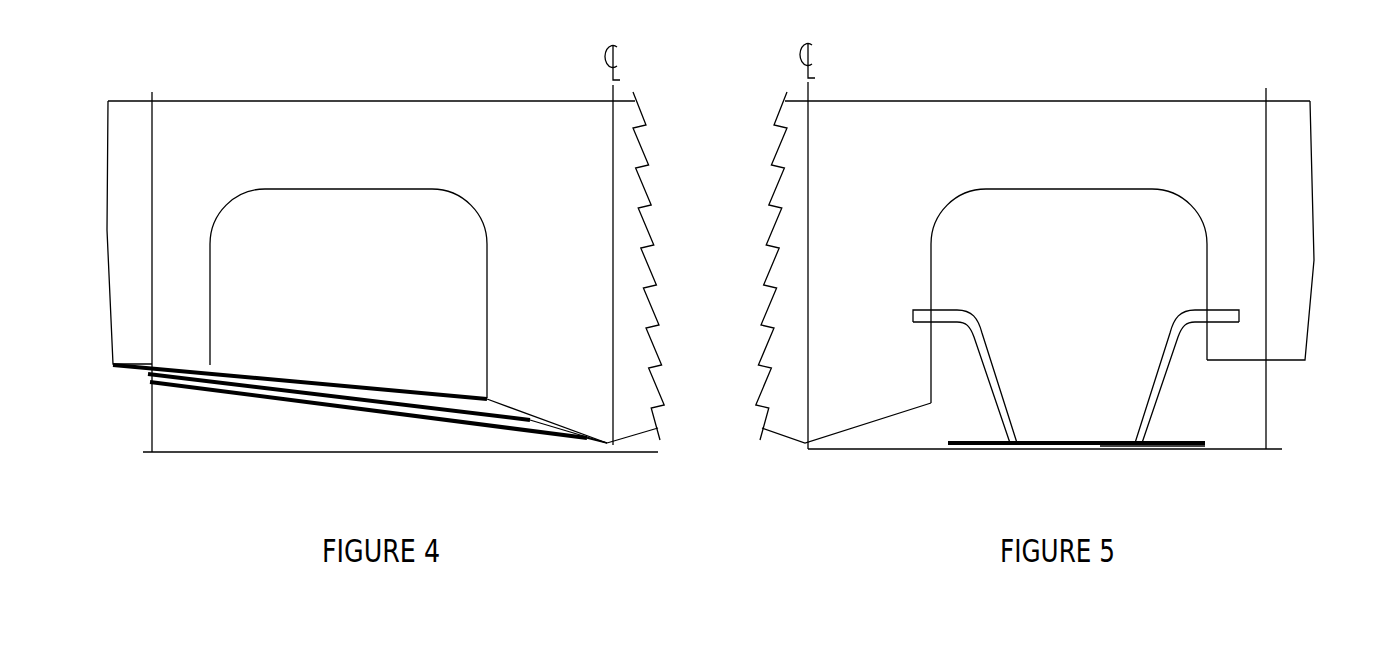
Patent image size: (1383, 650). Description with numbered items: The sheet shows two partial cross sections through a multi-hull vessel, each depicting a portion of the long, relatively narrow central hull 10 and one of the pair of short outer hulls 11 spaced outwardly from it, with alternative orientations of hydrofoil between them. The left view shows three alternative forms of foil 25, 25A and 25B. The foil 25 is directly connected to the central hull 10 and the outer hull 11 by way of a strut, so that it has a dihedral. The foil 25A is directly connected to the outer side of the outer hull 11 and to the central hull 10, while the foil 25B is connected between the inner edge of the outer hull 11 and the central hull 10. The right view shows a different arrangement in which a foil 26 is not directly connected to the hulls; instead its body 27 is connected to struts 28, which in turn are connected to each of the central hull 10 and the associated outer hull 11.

In FIG. 4, the central hull 10 is at (640, 147).
In FIG. 5, the central hull 10 is at (780, 147).
In FIG. 4, the outer hull 11 is at (177, 313).
In FIG. 5, the outer hull 11 is at (1273, 323).
In FIG. 4, the foil 25 is at (404, 412).
In FIG. 4, the foil 25A is at (377, 408).
In FIG. 4, the foil 25B is at (360, 388).
In FIG. 5, the foil 26 is at (1076, 470).
In FIG. 5, the body 27 is at (1146, 471).
In FIG. 5, the strut 28 is at (1076, 376).